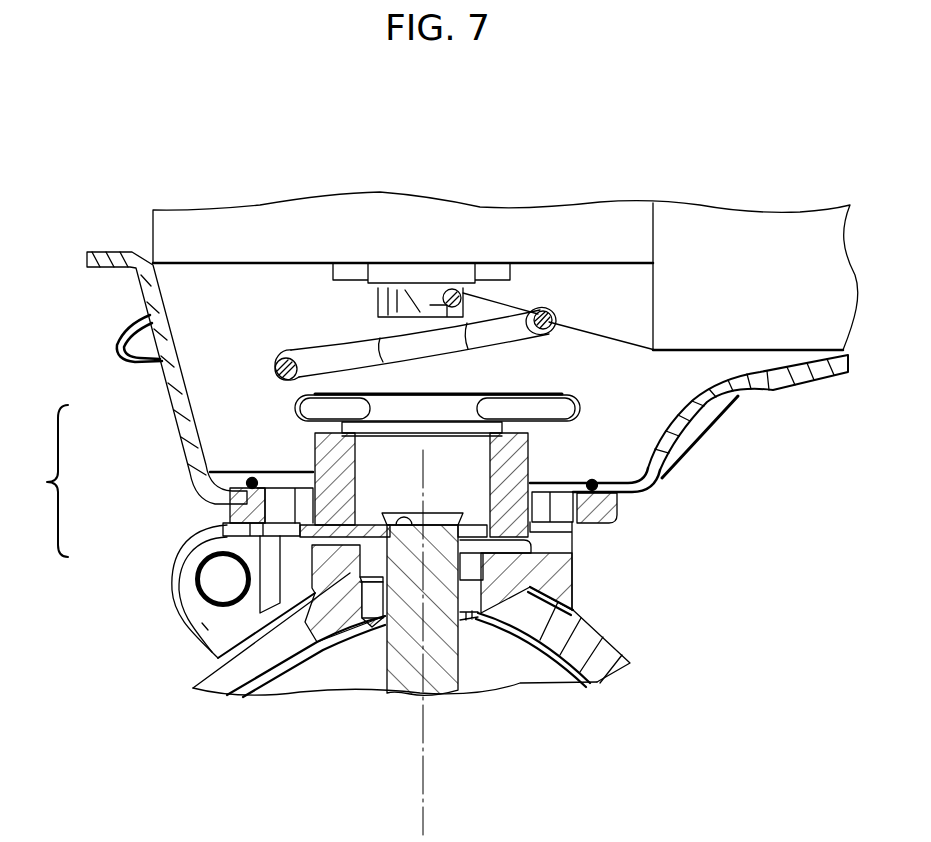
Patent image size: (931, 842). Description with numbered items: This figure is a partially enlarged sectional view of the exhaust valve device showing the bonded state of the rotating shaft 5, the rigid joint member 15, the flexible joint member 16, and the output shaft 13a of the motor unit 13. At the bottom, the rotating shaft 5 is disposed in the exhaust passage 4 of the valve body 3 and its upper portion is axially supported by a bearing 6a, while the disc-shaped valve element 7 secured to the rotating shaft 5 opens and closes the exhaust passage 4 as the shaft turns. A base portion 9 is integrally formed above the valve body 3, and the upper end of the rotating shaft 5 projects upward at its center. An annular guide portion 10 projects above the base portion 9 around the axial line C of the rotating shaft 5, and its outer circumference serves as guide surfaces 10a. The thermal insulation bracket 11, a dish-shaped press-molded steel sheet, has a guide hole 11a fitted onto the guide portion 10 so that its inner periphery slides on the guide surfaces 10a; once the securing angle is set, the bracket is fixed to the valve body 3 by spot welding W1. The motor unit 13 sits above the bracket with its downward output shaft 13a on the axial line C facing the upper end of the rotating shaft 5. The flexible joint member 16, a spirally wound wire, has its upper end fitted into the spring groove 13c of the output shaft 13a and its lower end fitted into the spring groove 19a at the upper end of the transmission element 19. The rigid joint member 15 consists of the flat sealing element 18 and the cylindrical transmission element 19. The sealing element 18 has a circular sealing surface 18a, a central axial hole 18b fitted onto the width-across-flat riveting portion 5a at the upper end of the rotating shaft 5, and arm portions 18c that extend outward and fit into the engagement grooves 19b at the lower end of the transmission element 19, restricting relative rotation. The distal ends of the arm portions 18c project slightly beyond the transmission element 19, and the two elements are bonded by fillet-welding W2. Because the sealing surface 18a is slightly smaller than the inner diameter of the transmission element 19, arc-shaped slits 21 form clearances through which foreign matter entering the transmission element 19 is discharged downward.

The valve body 3 is at (615, 653).
The exhaust passage 4 is at (503, 652).
The rotating shaft 5 is at (448, 690).
The riveting portion 5a is at (474, 488).
The bearing 6a is at (370, 567).
The valve element 7 is at (478, 667).
The base portion 9 is at (560, 588).
The guide portion 10 is at (567, 503).
The guide surfaces 10a is at (613, 480).
The thermal insulation bracket 11 is at (769, 380).
The guide hole 11a is at (570, 493).
The motor unit 13 is at (525, 233).
The output shaft 13a is at (372, 300).
The spring groove 13c is at (420, 295).
The rigid joint member 15 is at (39, 481).
The flexible joint member 16 is at (318, 345).
The sealing element 18 is at (300, 548).
The sealing surface 18a is at (463, 560).
The axial hole 18b is at (410, 515).
The arm portions 18c is at (333, 552).
The transmission element 19 is at (297, 438).
The spring groove 19a is at (298, 412).
The engagement grooves 19b is at (340, 580).
The slits 21 is at (483, 524).
The spot welding W1 is at (632, 390).
The fillet-welding W2 is at (240, 503).
The axial line C is at (420, 790).